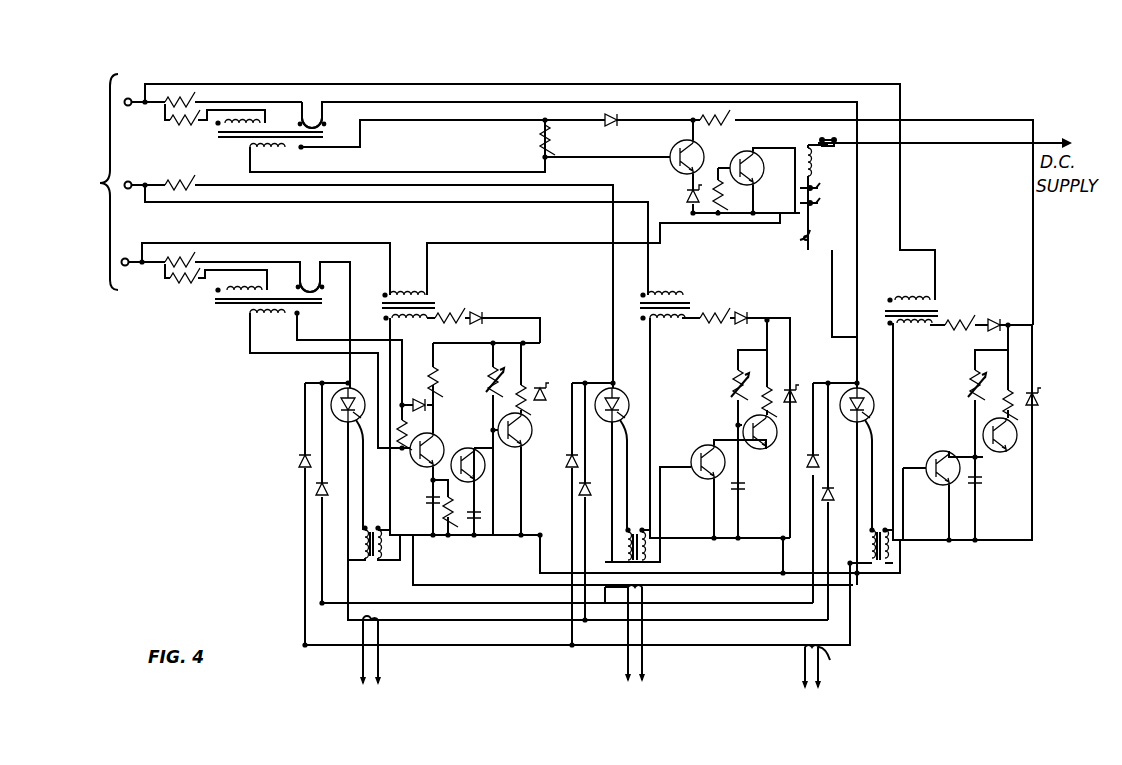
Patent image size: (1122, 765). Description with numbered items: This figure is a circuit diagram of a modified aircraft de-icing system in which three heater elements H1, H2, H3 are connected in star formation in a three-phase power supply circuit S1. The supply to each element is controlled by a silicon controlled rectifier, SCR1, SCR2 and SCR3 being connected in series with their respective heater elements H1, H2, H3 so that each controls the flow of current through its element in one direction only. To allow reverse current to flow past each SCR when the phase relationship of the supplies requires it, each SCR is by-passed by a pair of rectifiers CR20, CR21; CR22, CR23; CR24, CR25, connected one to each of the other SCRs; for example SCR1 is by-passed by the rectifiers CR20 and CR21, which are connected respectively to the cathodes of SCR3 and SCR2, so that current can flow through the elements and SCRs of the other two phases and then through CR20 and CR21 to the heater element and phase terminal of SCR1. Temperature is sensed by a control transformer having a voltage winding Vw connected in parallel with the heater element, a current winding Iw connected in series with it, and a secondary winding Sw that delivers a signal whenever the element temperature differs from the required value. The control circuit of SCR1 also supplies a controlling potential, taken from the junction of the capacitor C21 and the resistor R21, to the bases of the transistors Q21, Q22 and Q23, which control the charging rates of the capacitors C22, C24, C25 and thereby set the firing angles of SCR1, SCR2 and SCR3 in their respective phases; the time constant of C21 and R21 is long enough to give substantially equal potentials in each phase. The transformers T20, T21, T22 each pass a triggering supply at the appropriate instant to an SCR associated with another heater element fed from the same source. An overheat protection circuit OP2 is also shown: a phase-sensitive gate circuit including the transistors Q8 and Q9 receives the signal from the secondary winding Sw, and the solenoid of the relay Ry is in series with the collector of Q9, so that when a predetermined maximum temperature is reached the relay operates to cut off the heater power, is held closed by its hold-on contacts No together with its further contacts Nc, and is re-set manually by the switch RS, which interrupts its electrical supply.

The three-phase power supply circuit S1 is at (98, 182).
The heater element H1 is at (168, 268).
The heater element H2 is at (185, 188).
The heater element H3 is at (168, 110).
The voltage winding Vw is at (236, 120).
The current winding Iw is at (312, 115).
The secondary winding Sw is at (250, 156).
The overheat protection circuit OP2 is at (768, 128).
The re-set switch RS is at (828, 138).
The relay Ry is at (812, 162).
The hold-on contacts No is at (820, 188).
The normally closed contact Nc is at (820, 203).
The transistor Q8 is at (672, 170).
The transistor Q9 is at (740, 186).
The silicon controlled rectifier SCR1 is at (332, 400).
The silicon controlled rectifier SCR2 is at (600, 392).
The silicon controlled rectifier SCR3 is at (845, 392).
The transistor Q21 is at (440, 435).
The transistor Q22 is at (744, 430).
The transistor Q23 is at (935, 483).
The rectifier CR20 is at (300, 463).
The rectifier CR21 is at (316, 490).
The rectifier CR22 is at (590, 462).
The rectifier CR23 is at (585, 500).
The rectifier CR24 is at (830, 466).
The rectifier CR25 is at (830, 505).
The capacitor C21 is at (428, 510).
The capacitor C22 is at (476, 525).
The capacitor C24 is at (732, 495).
The capacitor C25 is at (985, 482).
The resistor R21 is at (450, 520).
The transformer T20 is at (362, 622).
The transformer T21 is at (606, 590).
The transformer T22 is at (845, 609).